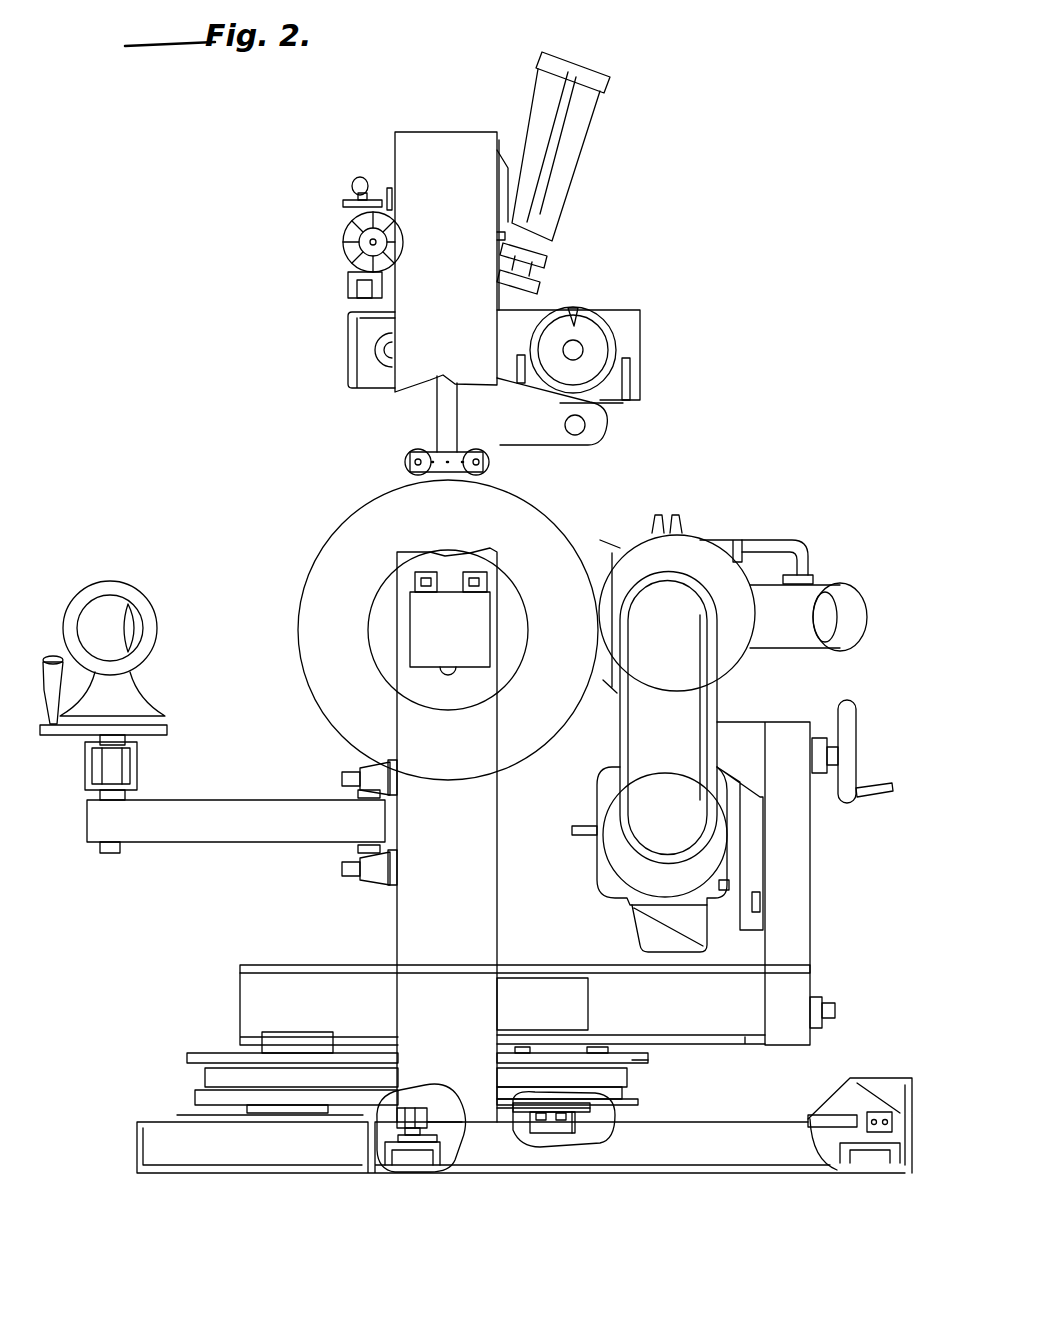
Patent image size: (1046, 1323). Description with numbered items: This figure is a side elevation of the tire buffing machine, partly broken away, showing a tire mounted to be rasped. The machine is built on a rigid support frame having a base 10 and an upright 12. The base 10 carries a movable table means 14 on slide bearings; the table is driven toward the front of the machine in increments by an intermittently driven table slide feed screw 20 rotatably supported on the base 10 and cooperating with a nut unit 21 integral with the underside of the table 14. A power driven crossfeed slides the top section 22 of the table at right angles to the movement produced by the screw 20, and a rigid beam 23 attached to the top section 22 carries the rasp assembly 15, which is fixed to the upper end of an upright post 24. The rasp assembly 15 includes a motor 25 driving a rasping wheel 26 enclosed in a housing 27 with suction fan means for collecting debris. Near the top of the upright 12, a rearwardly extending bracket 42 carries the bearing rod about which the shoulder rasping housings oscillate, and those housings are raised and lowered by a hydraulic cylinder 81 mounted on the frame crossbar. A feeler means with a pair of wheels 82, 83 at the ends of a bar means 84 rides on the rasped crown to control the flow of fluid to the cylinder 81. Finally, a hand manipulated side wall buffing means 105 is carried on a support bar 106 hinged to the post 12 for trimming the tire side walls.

The base 10 is at (263, 1160).
The upright 12 is at (413, 917).
The table means 14 is at (256, 959).
The rasp assembly 15 is at (816, 865).
The table slide feed screw 20 is at (440, 1133).
The nut unit 21 is at (560, 1132).
The top section of the table 22 is at (648, 1057).
The rigid beam 23 is at (748, 1022).
The upright post 24 is at (800, 918).
The motor 25 is at (610, 876).
The rasping wheel 26 is at (612, 600).
The housing 27 is at (687, 543).
The bracket 42 is at (600, 436).
The cylinder 81 is at (582, 115).
The feeler wheel 82 is at (410, 462).
The feeler wheel 83 is at (486, 466).
The bar means 84 is at (455, 455).
The side wall buffing means 105 is at (150, 592).
The support bar 106 is at (243, 783).